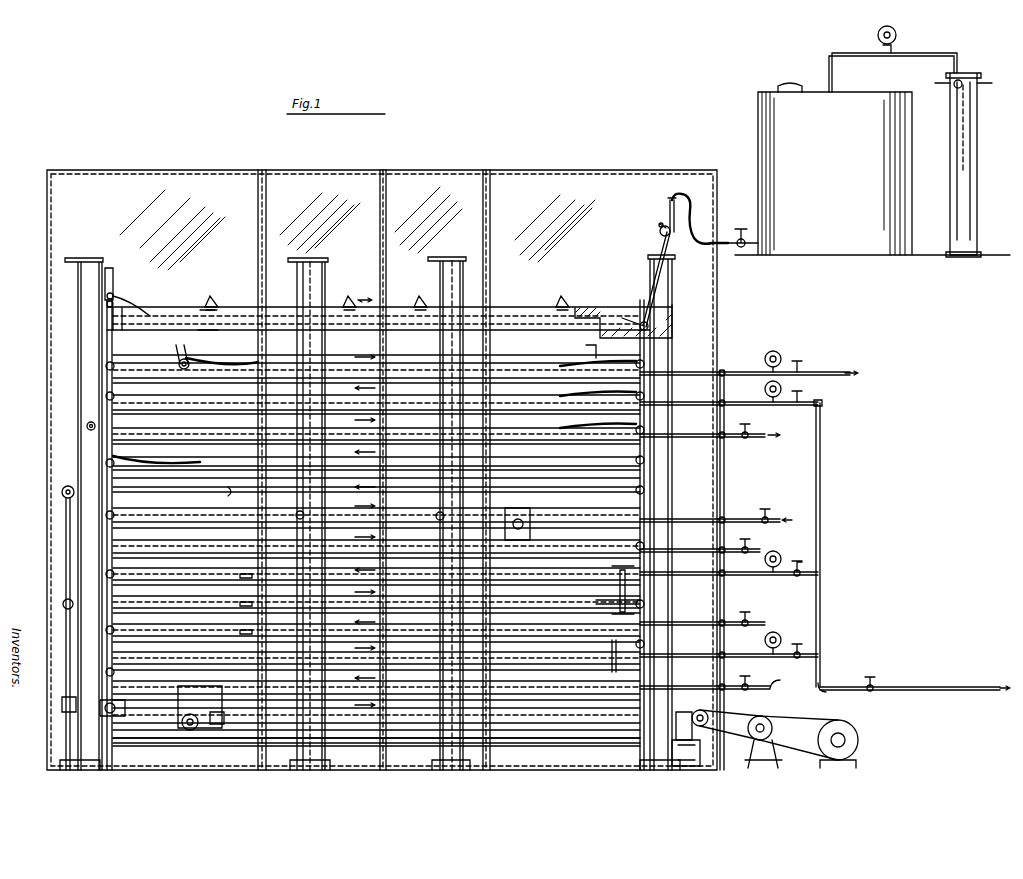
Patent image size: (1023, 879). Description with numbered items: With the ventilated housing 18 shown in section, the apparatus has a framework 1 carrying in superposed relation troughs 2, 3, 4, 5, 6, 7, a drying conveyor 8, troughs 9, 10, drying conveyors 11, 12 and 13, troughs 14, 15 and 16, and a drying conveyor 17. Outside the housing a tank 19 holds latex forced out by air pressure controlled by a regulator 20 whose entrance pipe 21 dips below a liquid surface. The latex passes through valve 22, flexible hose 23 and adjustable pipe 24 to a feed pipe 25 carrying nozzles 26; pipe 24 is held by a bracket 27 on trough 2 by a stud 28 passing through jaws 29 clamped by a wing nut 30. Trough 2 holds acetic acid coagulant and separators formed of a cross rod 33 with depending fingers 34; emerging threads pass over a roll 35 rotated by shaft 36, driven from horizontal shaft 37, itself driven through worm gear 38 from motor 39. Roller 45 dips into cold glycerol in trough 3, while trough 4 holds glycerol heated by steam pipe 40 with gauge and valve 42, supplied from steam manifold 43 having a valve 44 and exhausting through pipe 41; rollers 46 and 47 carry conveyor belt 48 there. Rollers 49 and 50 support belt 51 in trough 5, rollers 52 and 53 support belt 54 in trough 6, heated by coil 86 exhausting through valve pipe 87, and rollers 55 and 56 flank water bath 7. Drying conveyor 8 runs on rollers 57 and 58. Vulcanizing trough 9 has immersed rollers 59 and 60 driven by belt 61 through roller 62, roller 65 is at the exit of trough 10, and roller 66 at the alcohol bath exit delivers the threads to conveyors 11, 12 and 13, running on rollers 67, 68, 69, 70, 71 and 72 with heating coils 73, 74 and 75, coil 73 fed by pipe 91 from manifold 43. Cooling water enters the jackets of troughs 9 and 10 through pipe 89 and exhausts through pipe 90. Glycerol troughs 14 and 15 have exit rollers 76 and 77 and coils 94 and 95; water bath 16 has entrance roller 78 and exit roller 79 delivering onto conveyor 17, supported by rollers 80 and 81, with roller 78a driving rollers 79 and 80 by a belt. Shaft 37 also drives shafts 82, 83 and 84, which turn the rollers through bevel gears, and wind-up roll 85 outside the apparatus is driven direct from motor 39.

The framework 1 is at (84, 262).
The trough 2 is at (232, 307).
The trough 3 is at (376, 369).
The trough 4 is at (412, 345).
The trough 5 is at (236, 397).
The trough 6 is at (238, 430).
The water bath 7 is at (244, 460).
The drying conveyor 8 is at (244, 492).
The trough 9 is at (341, 507).
The trough 10 is at (356, 542).
The drying conveyor 11 is at (338, 573).
The drying conveyor 12 is at (350, 601).
The drying conveyor 13 is at (348, 628).
The trough 14 is at (243, 652).
The trough 15 is at (253, 682).
The water bath 16 is at (160, 728).
The drying conveyor 17 is at (343, 720).
The housing 18 is at (256, 170).
The tank 19 is at (872, 140).
The regulator 20 is at (962, 182).
The entrance pipe 21 is at (980, 85).
The valve 22 is at (741, 233).
The flexible hose 23 is at (688, 232).
The adjustable pipe 24 is at (660, 239).
The feed pipe 25 is at (676, 305).
The nozzles 26 is at (628, 318).
The bracket 27 is at (664, 215).
The stud 28 is at (655, 232).
The jaws 29 is at (652, 220).
The wing nut 30 is at (657, 216).
The cross rod 33 is at (210, 296).
The fingers 34 is at (204, 302).
The roll 35 is at (113, 294).
The shaft 36 is at (110, 275).
The horizontal shaft 37 is at (228, 738).
The worm gear 38 is at (686, 753).
The motor 39 is at (852, 710).
The steam pipe 40 is at (812, 370).
The pipe 41 is at (748, 372).
The gauge and valve 42 is at (798, 366).
The steam manifold pipe 43 is at (822, 482).
The valve 44 is at (872, 676).
The roller 45 is at (106, 362).
The roller 46 is at (188, 362).
The roller 47 is at (630, 358).
The endless conveyor belt 48 is at (598, 354).
The roller 49 is at (102, 392).
The roller 50 is at (693, 379).
The conveyor belt 51 is at (634, 390).
The roller 52 is at (85, 423).
The roller 53 is at (582, 608).
The conveyor belt 54 is at (628, 413).
The roller 55 is at (118, 461).
The roller 56 is at (636, 447).
The roller 57 is at (648, 488).
The roller 58 is at (70, 486).
The roller 59 is at (296, 512).
The roller 60 is at (436, 512).
The belt 61 is at (236, 493).
The roller 62 is at (124, 514).
The roller 65 is at (524, 512).
The roller 66 is at (648, 544).
The roller 67 is at (102, 574).
The roller 68 is at (60, 604).
The roller 69 is at (104, 630).
The roller 70 is at (692, 576).
The roller 71 is at (648, 602).
The roller 72 is at (692, 620).
The heating coil 73 is at (250, 574).
The heating coil 74 is at (253, 602).
The heating coil 75 is at (253, 630).
The roller 76 is at (630, 640).
The roller 77 is at (120, 672).
The roller 78 is at (100, 704).
The roller 78a is at (64, 700).
The roller 79 is at (188, 732).
The roller 80 is at (222, 700).
The roller 81 is at (686, 706).
The shaft 82 is at (650, 676).
The shaft 83 is at (58, 543).
The shaft 84 is at (680, 650).
The wind-up roll 85 is at (770, 718).
The coil of piping 86 is at (748, 404).
The valve pipe 87 is at (748, 432).
The pipe 89 is at (768, 524).
The pipe 90 is at (750, 546).
The pipe 91 is at (805, 573).
The coil 94 is at (798, 645).
The coil 95 is at (784, 680).